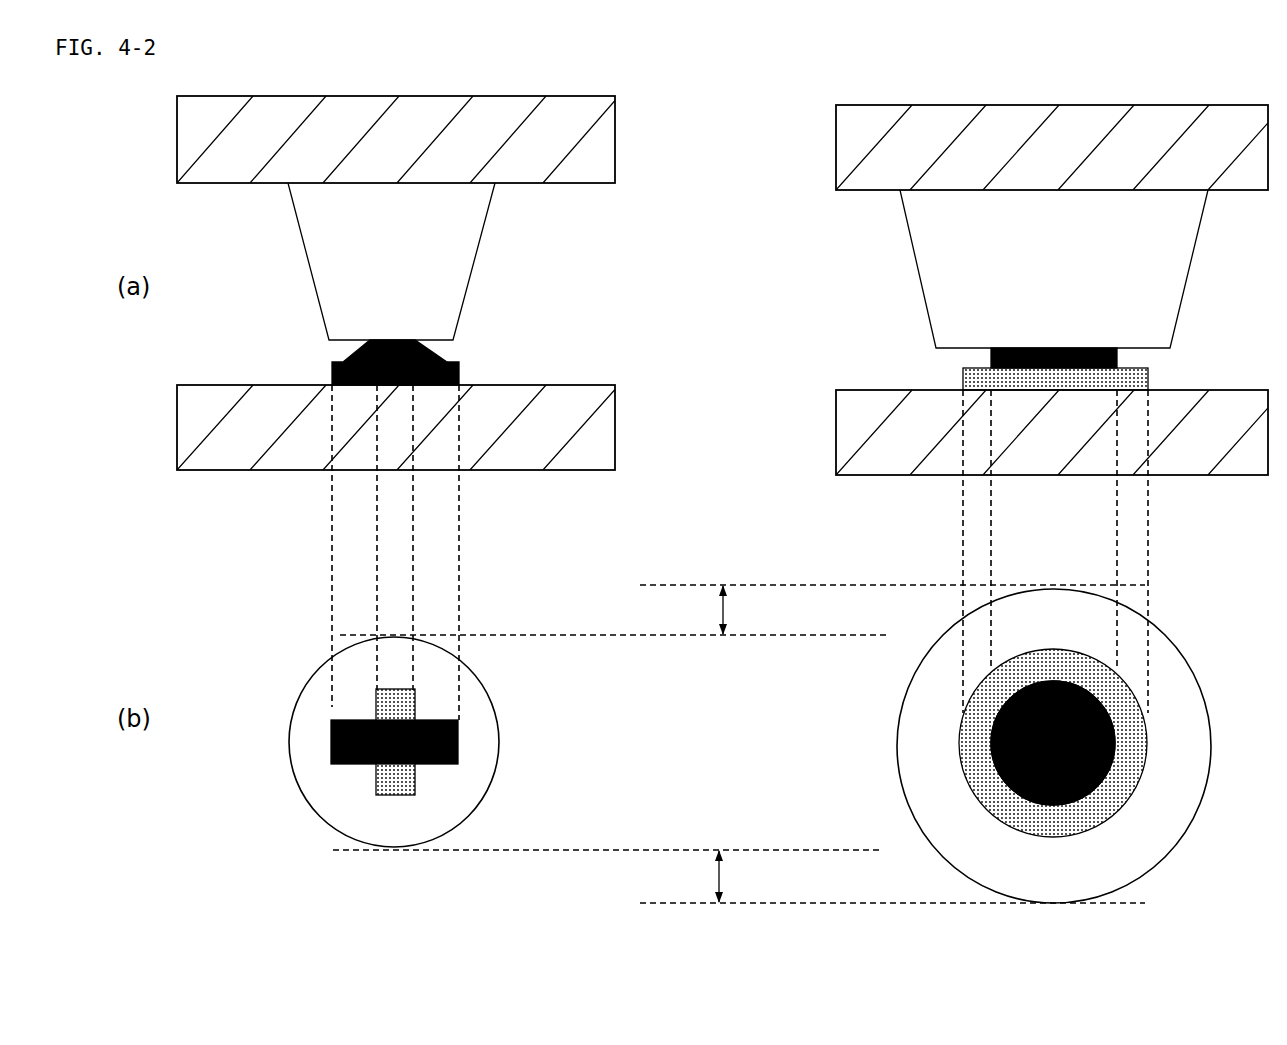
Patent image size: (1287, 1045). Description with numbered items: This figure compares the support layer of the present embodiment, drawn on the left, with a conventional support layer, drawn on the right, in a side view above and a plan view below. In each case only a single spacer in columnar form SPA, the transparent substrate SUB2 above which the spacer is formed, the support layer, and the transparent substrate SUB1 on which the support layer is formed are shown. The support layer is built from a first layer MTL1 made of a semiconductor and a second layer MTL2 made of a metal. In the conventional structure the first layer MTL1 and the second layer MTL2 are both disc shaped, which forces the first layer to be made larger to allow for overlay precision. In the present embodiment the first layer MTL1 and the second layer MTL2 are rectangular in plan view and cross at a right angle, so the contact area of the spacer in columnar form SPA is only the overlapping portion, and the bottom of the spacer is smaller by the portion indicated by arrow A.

The transparent substrate SUB2 is at (833, 145).
The transparent substrate SUB1 is at (834, 440).
The spacer in columnar form SPA is at (480, 257).
The second layer MTL2 is at (983, 358).
The first layer MTL1 is at (960, 378).
The arrow A is at (712, 744).